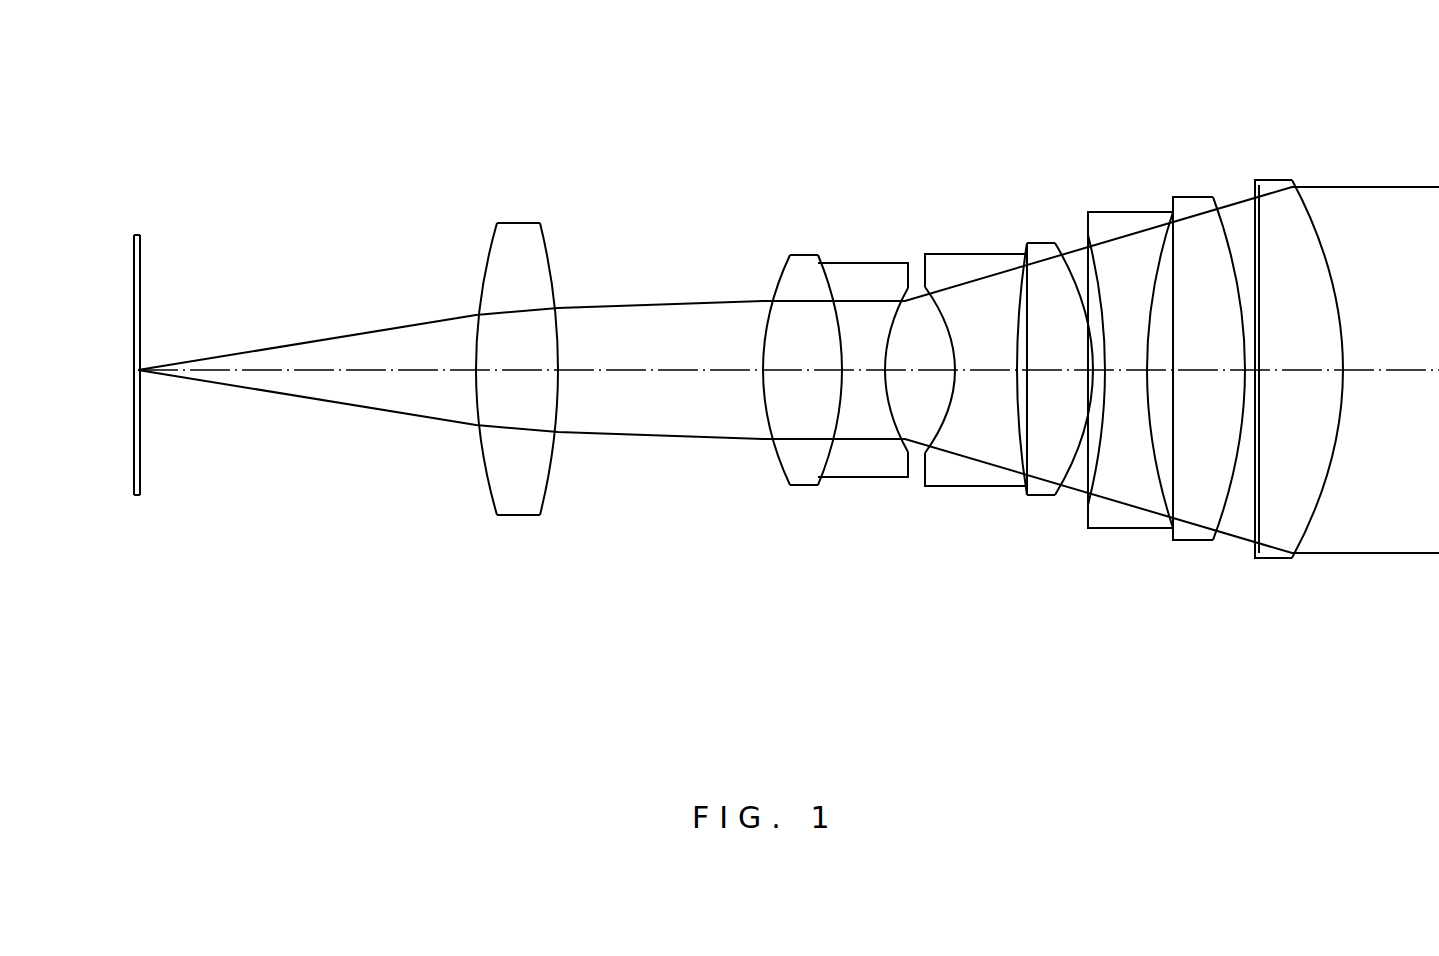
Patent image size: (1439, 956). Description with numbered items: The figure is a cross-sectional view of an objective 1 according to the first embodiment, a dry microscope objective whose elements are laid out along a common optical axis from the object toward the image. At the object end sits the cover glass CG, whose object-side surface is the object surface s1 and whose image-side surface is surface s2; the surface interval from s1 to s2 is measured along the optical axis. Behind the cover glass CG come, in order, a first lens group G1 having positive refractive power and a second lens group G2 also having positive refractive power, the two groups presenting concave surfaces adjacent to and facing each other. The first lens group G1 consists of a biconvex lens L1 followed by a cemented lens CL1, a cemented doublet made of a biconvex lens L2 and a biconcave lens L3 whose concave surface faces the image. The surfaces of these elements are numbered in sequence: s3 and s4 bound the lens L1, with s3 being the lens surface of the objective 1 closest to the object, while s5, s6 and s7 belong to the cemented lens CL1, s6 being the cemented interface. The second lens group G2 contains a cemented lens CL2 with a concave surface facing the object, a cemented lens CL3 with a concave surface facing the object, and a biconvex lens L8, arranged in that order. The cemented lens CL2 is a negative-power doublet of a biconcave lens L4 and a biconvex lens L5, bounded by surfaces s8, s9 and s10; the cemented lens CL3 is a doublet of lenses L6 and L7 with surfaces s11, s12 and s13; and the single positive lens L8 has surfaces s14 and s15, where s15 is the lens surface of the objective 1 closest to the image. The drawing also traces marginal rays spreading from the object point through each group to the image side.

The objective 1 is at (1387, 73).
The cover glass CG is at (135, 497).
The first lens group G1 is at (908, 674).
The second lens group G2 is at (1338, 674).
The cemented lens CL1 is at (897, 597).
The cemented lens CL2 is at (1068, 597).
The cemented lens CL3 is at (1215, 599).
The lens L1 is at (517, 458).
The second lens L2 is at (808, 462).
The third lens L3 is at (882, 455).
The fourth lens L4 is at (967, 475).
The fifth lens L5 is at (1045, 455).
The sixth lens L6 is at (1128, 468).
The seventh lens L7 is at (1193, 470).
The lens L8 is at (1272, 480).
The object surface s1 is at (133, 285).
The surface of the cover glass on an image side s2 is at (140, 285).
The lens surface closest to an object s3 is at (487, 272).
The first lens image-side surface s4 is at (556, 262).
The second lens object-side surface s5 is at (775, 295).
The cemented surface of second and third lenses s6 is at (836, 300).
The third lens image-side surface s7 is at (903, 300).
The fourth lens object-side surface s8 is at (940, 300).
The cemented surface of fourth and fifth lenses s9 is at (1018, 308).
The fifth lens image-side surface s10 is at (1080, 292).
The sixth lens object-side surface s11 is at (1096, 295).
The cemented surface of sixth and seventh lenses s12 is at (1143, 290).
The seventh lens image-side surface s13 is at (1233, 240).
The eighth lens object-side surface s14 is at (1255, 240).
The lens surface closest to an image s15 is at (1325, 250).